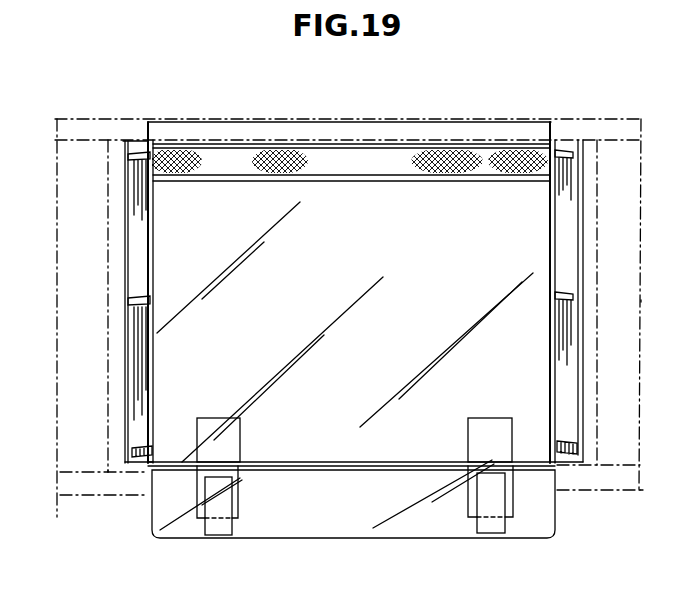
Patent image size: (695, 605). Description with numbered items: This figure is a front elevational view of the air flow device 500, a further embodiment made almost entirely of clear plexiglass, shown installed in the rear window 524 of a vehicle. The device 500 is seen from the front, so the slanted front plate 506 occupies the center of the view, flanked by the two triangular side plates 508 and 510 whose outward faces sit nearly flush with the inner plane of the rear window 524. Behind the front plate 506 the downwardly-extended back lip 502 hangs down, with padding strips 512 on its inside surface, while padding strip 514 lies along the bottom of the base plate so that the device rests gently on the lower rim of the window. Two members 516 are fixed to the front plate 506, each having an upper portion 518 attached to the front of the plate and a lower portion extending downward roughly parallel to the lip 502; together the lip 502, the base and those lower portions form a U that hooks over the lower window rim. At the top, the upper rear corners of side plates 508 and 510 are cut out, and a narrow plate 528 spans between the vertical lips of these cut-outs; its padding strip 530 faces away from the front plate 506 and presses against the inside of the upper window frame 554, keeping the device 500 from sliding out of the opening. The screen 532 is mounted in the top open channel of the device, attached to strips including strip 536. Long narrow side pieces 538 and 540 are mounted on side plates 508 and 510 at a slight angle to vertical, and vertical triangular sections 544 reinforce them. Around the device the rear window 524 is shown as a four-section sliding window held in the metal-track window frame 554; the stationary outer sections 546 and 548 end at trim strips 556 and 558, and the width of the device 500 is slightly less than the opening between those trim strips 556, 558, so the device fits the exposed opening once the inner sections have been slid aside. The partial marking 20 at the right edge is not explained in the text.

The air flow device 500 is at (342, 540).
The downwardly-extended back lip 502 is at (694, 500).
The front plate 506 is at (313, 447).
The side plate 508 is at (148, 182).
The side plate 510 is at (555, 223).
The padding strips 512 is at (208, 532).
The padding strip 514 is at (338, 470).
The members 516 is at (193, 450).
The upper portion 518 is at (215, 425).
The rear window 524 is at (645, 170).
The narrow plate 528 is at (389, 155).
The padding strip 530 is at (505, 128).
The screen 532 is at (445, 160).
The strip 536 is at (513, 173).
The side piece 538 is at (137, 345).
The side piece 540 is at (568, 365).
The vertical triangular sections 544 is at (562, 148).
The outer window section 546 is at (79, 177).
The outer window section 548 is at (645, 253).
The window frame 554 is at (132, 132).
The trim strip 556 is at (118, 383).
The trim strip 558 is at (592, 328).
The apparatus 20 is at (689, 380).